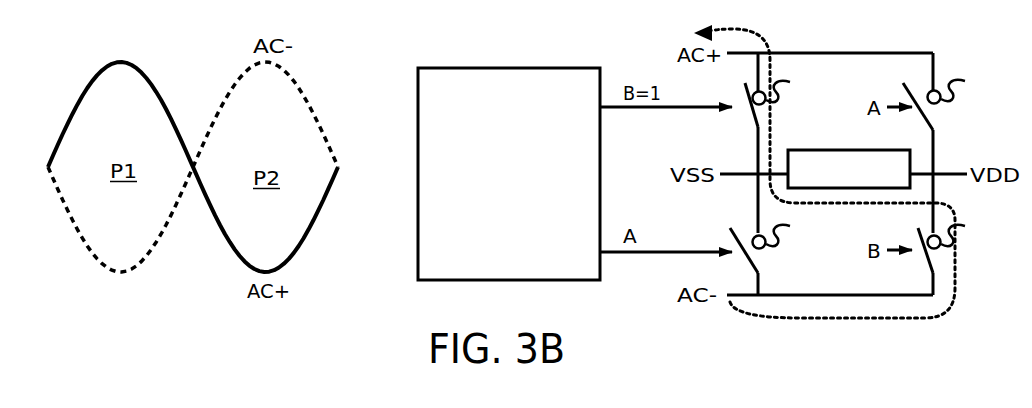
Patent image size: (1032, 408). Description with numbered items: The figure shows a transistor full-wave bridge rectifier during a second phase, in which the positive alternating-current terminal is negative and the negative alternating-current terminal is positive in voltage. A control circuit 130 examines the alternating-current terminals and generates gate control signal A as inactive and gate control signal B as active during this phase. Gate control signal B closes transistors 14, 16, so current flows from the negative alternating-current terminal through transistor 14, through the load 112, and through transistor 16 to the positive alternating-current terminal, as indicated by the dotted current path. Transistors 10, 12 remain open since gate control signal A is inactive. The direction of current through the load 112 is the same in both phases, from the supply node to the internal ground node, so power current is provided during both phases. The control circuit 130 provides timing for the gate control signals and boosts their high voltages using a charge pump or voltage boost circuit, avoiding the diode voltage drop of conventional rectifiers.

The transistor 10 is at (950, 91).
The transistor 12 is at (776, 244).
The transistor 14 is at (958, 244).
The transistor 16 is at (784, 90).
The load 112 is at (867, 182).
The control circuit 130 is at (578, 248).